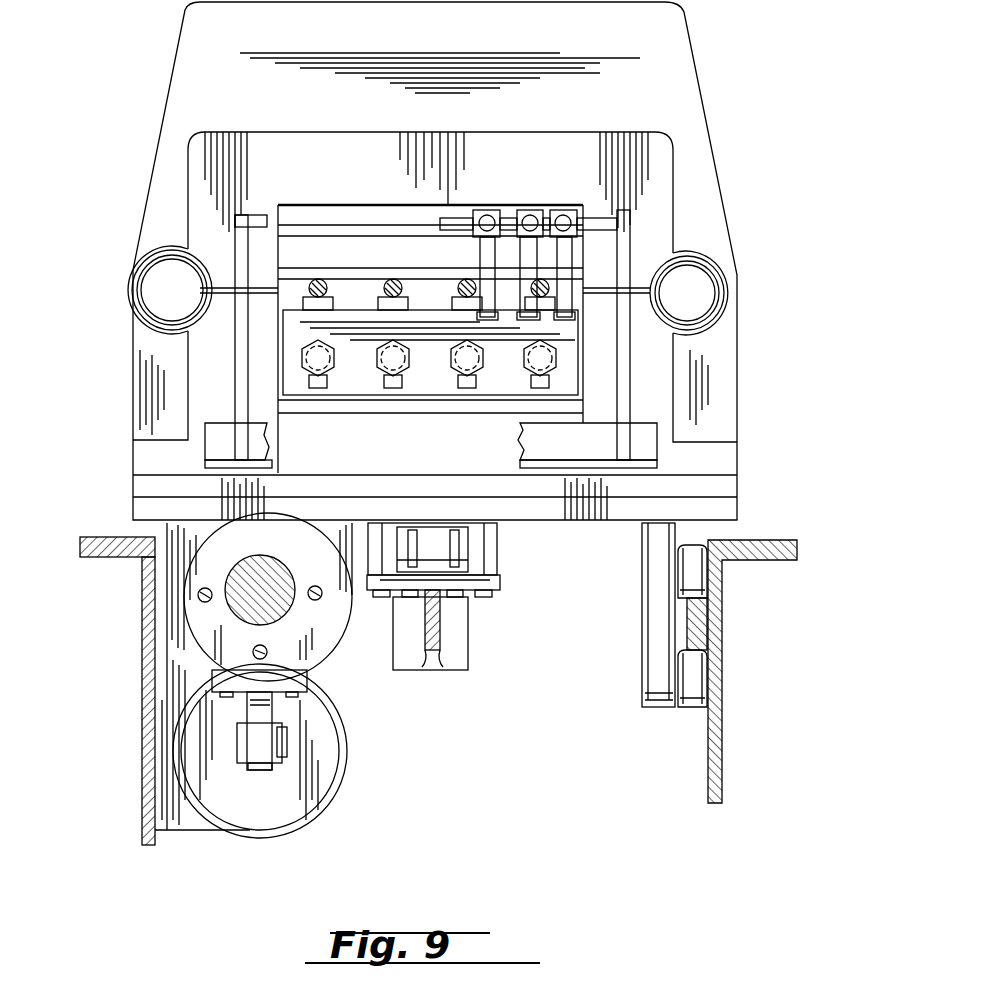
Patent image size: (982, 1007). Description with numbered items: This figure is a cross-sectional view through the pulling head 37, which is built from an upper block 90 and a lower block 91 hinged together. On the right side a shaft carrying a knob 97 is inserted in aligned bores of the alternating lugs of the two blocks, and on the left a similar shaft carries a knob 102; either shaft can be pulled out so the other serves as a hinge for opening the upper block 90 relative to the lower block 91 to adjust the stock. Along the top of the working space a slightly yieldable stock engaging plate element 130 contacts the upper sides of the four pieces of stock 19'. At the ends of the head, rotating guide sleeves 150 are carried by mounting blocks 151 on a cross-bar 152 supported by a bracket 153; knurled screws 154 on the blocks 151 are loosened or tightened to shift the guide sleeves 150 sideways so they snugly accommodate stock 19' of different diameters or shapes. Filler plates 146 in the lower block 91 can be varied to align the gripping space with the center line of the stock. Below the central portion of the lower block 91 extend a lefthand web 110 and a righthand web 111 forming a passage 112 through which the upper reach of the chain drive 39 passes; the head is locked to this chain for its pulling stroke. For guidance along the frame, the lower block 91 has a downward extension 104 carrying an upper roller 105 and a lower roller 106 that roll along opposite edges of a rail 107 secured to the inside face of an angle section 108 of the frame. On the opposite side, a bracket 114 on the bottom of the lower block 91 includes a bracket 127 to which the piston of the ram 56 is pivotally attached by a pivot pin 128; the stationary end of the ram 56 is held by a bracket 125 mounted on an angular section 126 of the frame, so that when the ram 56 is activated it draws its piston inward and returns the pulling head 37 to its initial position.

The pulling head 37 is at (746, 195).
The upper block 90 is at (712, 143).
The lower block 91 is at (732, 466).
The knob 97 is at (715, 302).
The knob 102 is at (148, 303).
The stock engaging plate element 130 is at (347, 272).
The stock 19' is at (482, 272).
The guide sleeves 150 is at (520, 252).
The mounting blocks 151 is at (558, 212).
The cross-bar 152 is at (597, 217).
The bracket 153 is at (655, 339).
The knurled screws 154 is at (487, 215).
The filler plates 146 is at (465, 383).
The righthand web 111 is at (490, 565).
The passage 112 is at (465, 546).
The lefthand web 110 is at (383, 592).
The chain drive 39 is at (471, 615).
The bracket 114 is at (173, 588).
The angular section 126 is at (93, 558).
The bracket 125 is at (165, 790).
The bracket 127 is at (306, 720).
The pivot pin 128 is at (185, 746).
The ram 56 is at (341, 783).
The angle section 108 is at (797, 563).
The downward extension 104 is at (673, 632).
The upper roller 105 is at (707, 580).
The lower roller 106 is at (707, 680).
The rail 107 is at (707, 613).